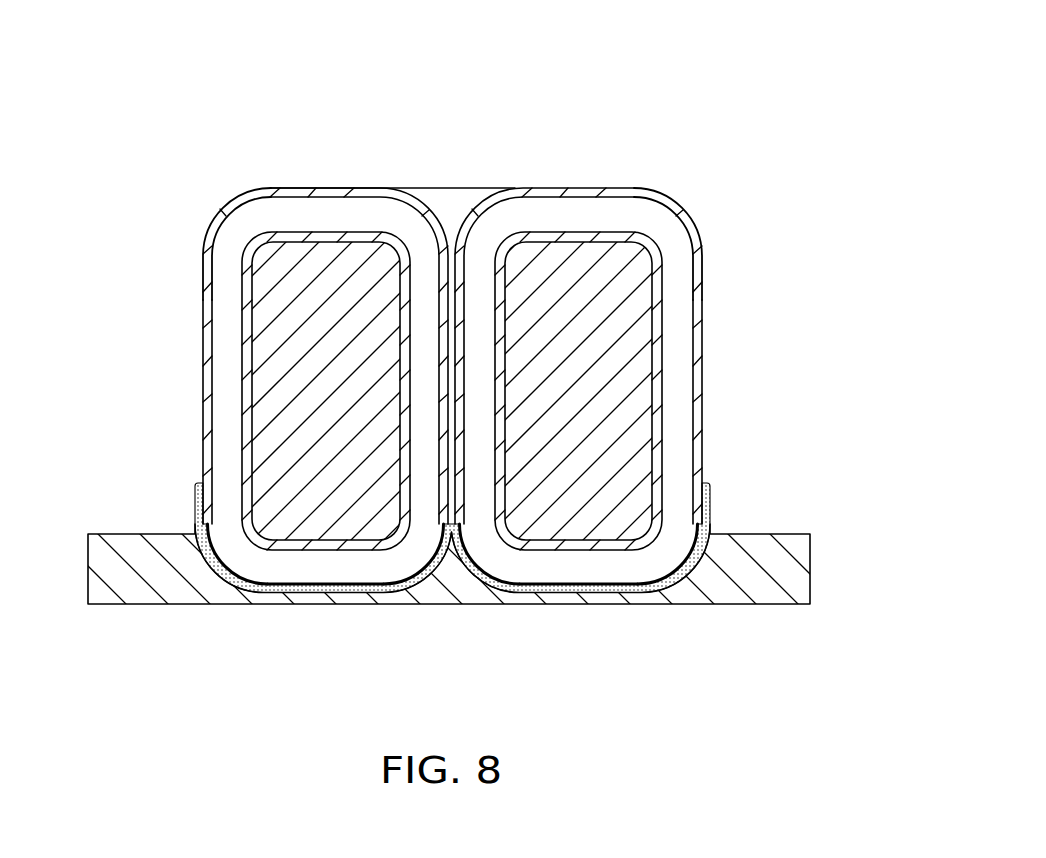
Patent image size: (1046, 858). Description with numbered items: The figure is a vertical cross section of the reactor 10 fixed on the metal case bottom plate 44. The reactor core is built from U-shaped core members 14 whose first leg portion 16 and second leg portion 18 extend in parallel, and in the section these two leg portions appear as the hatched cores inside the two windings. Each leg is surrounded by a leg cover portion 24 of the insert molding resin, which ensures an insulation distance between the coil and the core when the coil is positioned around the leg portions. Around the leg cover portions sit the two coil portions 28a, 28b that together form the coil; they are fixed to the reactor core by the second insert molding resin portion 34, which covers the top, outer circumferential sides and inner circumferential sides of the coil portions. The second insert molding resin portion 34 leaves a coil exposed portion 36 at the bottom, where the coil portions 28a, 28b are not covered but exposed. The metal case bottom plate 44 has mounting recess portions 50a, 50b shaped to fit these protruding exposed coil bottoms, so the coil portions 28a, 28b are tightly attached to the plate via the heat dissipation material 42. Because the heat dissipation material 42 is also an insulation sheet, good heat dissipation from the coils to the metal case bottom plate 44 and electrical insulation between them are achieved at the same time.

The reactor 10 is at (581, 94).
The core member 14 is at (452, 186).
The first leg portion 16 is at (594, 417).
The second leg portion 18 is at (341, 417).
The leg cover portion 24 is at (254, 303).
The coil portion 28a is at (653, 223).
The coil portion 28b is at (235, 237).
The second insert molding resin portion 34 is at (205, 291).
The coil exposed portion 36 is at (212, 555).
The heat dissipation material 42 is at (195, 500).
The metal case bottom plate 44 is at (800, 534).
The mounting recess portion 50a is at (574, 581).
The mounting recess portion 50b is at (332, 583).